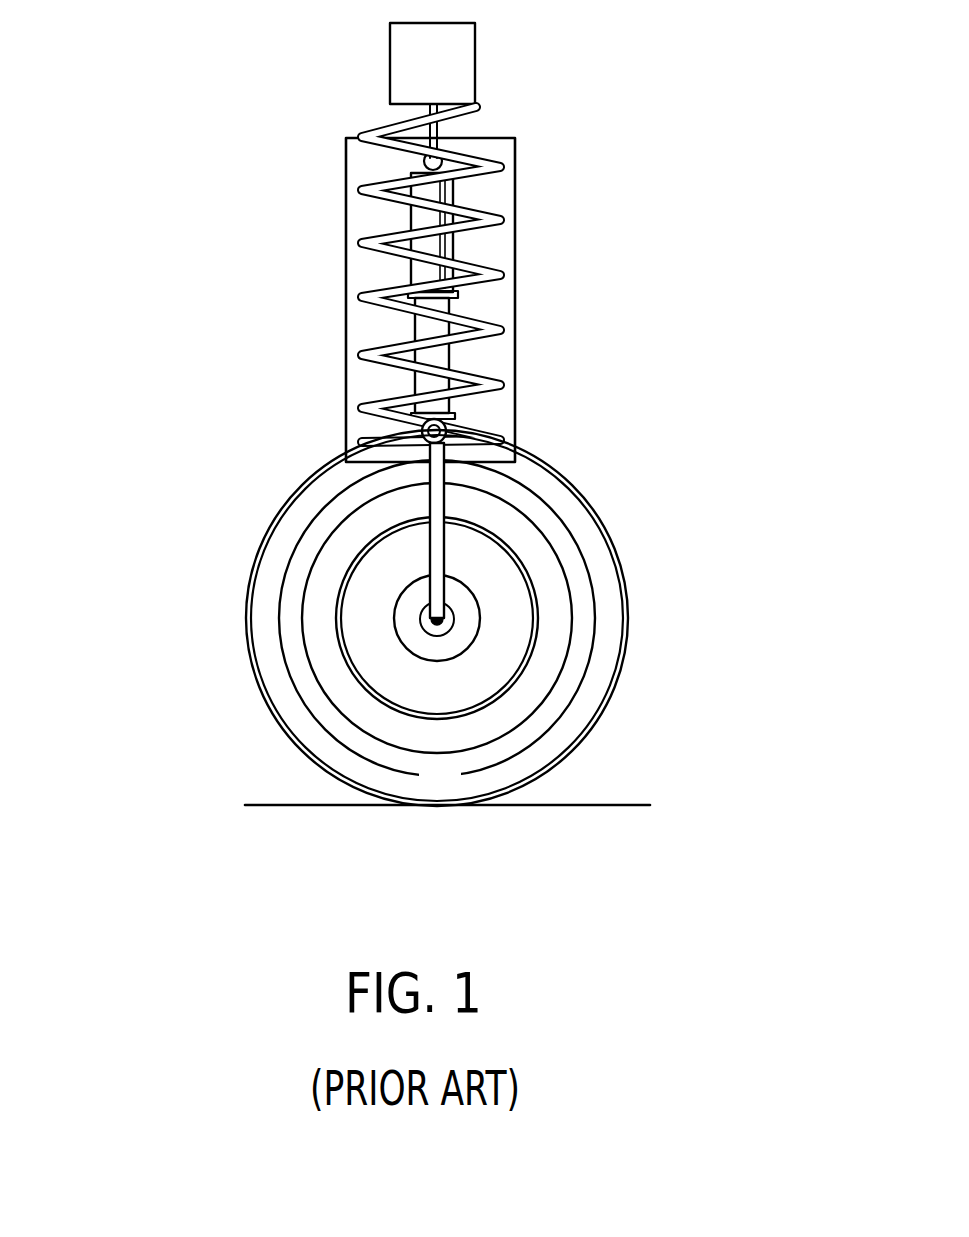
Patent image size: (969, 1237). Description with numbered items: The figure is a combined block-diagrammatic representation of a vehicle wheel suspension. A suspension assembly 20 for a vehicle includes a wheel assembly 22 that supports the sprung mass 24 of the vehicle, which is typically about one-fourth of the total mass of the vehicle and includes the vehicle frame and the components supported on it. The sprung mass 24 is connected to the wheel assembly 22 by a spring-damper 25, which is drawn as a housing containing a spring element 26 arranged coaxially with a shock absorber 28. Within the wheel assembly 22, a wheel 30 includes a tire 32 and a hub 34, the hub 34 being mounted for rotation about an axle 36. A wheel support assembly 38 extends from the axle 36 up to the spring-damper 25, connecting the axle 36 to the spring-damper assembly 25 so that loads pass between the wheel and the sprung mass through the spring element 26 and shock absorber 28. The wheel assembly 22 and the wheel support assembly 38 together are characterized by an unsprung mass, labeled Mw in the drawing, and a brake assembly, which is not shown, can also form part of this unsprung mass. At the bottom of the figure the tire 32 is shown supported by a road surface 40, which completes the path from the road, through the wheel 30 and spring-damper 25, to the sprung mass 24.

The suspension assembly 20 is at (389, 445).
The wheel assembly 22 is at (454, 570).
The sprung mass 24 is at (478, 67).
The spring-damper 25 is at (345, 270).
The spring element 26 is at (500, 215).
The shock absorber 28 is at (457, 248).
The wheel 30 is at (377, 712).
The tire 32 is at (608, 641).
The hub 34 is at (528, 557).
The axle 36 is at (443, 623).
The wheel support assembly 38 is at (446, 558).
The road surface 40 is at (322, 807).